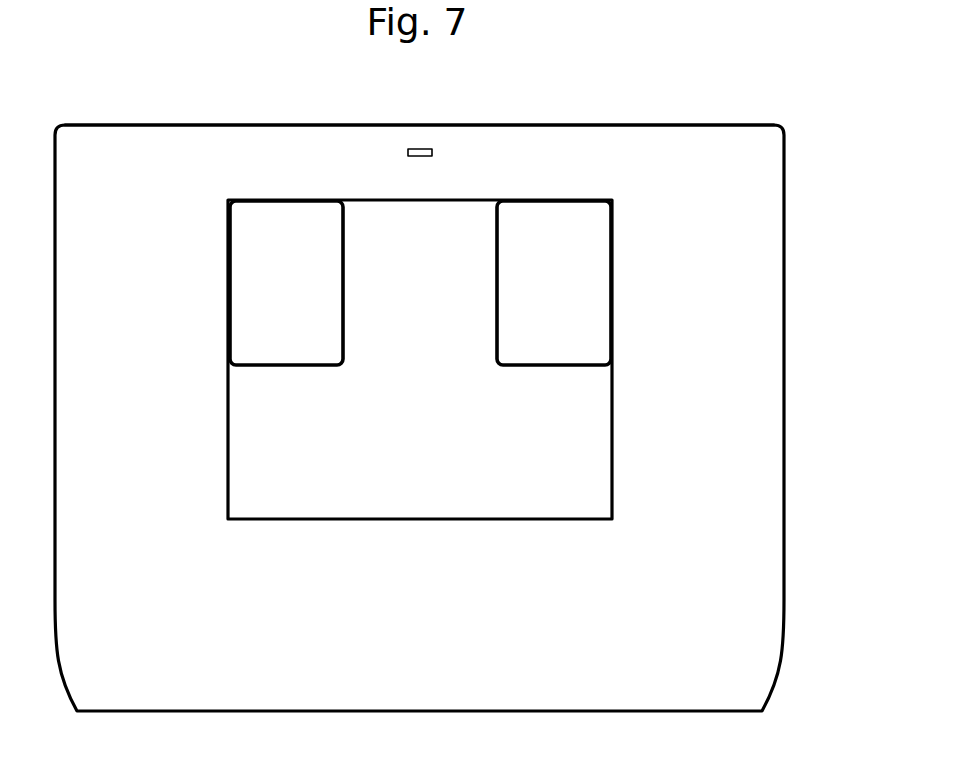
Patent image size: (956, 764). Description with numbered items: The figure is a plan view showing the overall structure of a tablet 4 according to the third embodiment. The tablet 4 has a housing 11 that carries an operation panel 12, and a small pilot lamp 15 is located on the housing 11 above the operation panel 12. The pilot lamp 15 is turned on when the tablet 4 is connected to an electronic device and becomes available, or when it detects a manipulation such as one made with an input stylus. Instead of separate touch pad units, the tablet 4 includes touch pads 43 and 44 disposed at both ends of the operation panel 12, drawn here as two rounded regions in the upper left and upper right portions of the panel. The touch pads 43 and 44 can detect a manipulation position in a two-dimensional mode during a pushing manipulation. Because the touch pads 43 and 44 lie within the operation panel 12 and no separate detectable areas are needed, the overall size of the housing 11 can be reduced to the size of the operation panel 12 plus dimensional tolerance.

The tablet 4 is at (786, 99).
The housing 11 is at (560, 125).
The operation panel 12 is at (613, 481).
The pilot lamp 15 is at (420, 149).
The touch pad 43 is at (584, 262).
The touch pad 44 is at (258, 262).